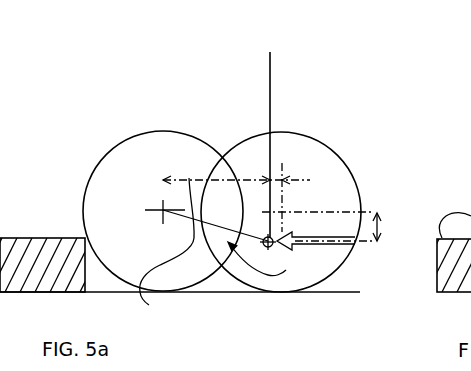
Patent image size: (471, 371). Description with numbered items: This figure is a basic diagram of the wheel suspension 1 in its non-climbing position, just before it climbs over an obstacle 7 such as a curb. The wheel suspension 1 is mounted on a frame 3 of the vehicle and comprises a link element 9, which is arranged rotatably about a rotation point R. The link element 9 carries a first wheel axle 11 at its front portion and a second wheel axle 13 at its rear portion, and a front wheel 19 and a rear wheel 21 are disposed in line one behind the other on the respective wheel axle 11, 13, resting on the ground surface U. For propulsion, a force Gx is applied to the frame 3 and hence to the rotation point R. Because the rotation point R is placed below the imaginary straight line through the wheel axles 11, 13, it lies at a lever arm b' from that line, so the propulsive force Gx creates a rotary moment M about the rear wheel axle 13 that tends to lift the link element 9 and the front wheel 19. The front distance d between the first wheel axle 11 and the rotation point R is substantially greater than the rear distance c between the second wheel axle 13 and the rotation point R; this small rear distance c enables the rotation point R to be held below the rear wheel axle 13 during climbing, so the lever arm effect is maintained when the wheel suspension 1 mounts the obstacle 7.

The wheel suspension 1 is at (208, 185).
The frame 3 is at (268, 112).
The obstacle 7 is at (14, 238).
The link element 9 is at (167, 253).
The first wheel axle 11 is at (158, 200).
The second wheel axle 13 is at (283, 212).
The front wheel 19 is at (127, 141).
The rear wheel 21 is at (295, 133).
The front distance d is at (189, 178).
The rear distance c is at (276, 172).
The rotary moment M is at (226, 286).
The rotation point R is at (274, 247).
The propulsive force Gx is at (352, 255).
The ground surface U is at (348, 292).
The lever arm b' is at (389, 251).